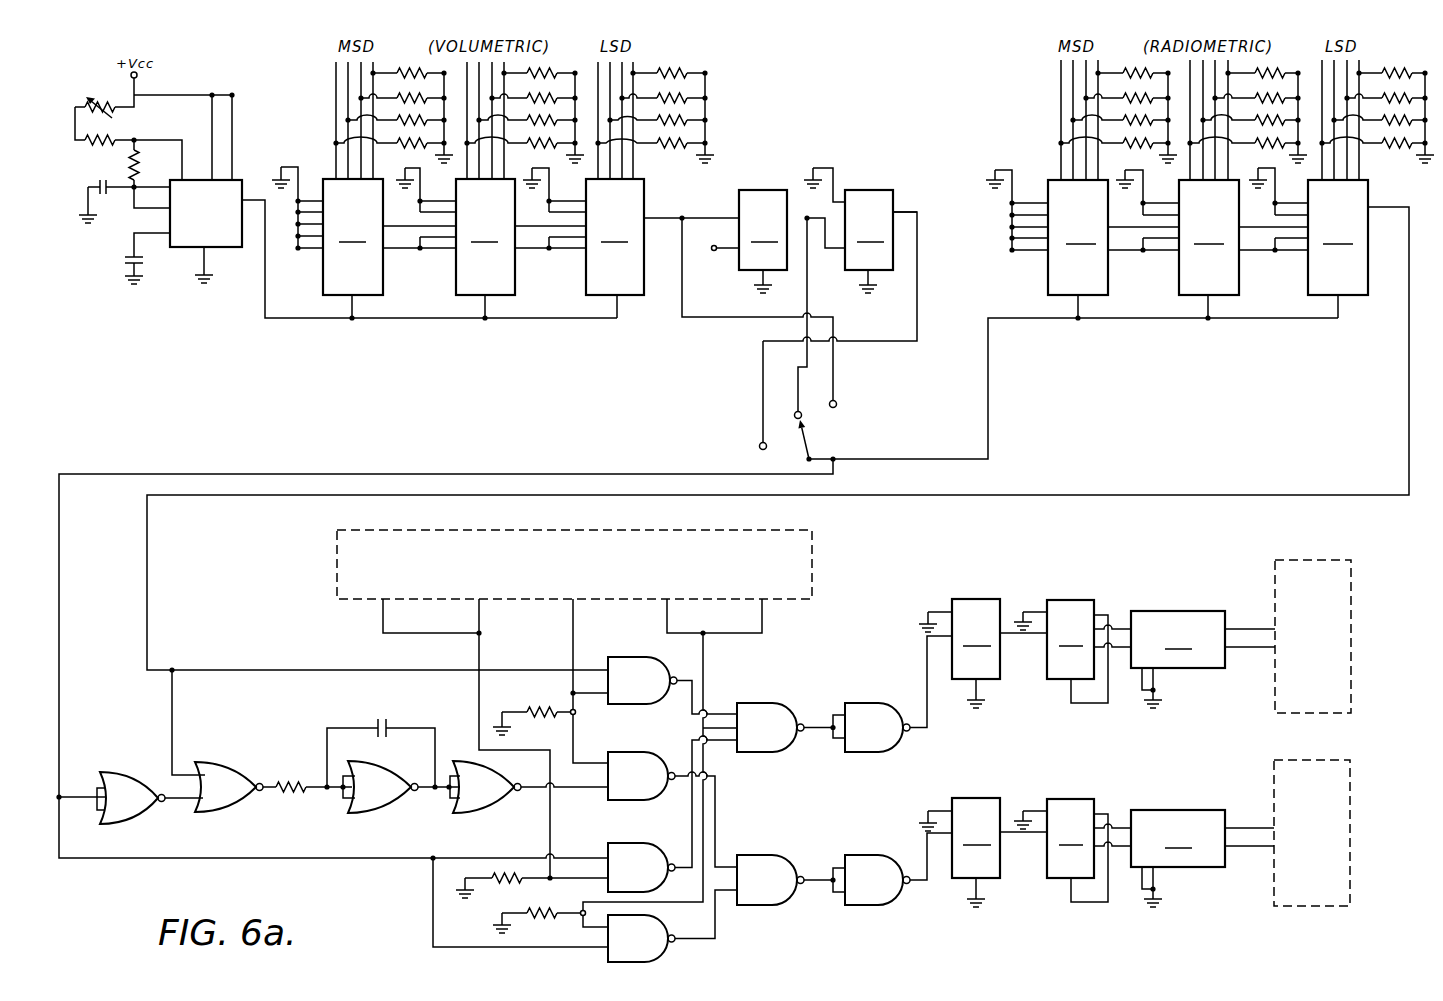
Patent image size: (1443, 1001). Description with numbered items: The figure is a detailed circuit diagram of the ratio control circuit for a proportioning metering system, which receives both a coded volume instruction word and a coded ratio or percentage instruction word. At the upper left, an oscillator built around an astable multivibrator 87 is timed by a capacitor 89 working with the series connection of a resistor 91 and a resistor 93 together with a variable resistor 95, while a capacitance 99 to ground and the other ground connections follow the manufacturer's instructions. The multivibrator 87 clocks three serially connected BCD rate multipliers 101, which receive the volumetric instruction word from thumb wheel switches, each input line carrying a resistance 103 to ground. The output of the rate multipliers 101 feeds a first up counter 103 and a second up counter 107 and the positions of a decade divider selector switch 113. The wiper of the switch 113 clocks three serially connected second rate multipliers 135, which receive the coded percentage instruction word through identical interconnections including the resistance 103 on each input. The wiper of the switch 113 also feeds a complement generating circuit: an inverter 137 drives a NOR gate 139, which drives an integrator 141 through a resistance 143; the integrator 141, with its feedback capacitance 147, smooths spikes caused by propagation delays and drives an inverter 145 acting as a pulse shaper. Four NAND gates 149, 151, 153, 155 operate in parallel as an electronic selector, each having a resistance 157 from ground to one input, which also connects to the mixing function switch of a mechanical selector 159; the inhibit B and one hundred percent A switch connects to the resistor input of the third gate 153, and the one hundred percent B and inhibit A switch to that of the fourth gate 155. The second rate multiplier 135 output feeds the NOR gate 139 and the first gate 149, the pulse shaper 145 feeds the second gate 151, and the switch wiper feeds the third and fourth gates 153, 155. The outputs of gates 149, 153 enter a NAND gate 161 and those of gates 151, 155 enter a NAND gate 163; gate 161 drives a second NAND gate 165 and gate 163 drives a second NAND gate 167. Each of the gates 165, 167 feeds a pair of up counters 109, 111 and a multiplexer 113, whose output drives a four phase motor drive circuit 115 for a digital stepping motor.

The astable multivibrator 87 is at (206, 231).
The capacitor 89 is at (98, 178).
The resistor 91 is at (110, 138).
The resistor 93 is at (138, 174).
The variable resistor 95 is at (97, 99).
The capacitance 99 is at (121, 262).
The BCD rate multipliers 101 is at (483, 237).
The resistor to ground / first up counter 103 is at (883, 174).
The second up counter 107 is at (860, 230).
The up counter 109 is at (983, 753).
The up counter 111 is at (1072, 751).
The decade divider selector switch / multiplexer 113 is at (1005, 652).
The four phase motor drive circuit 115 is at (1376, 758).
The second rate multipliers 135 is at (1208, 247).
The inverter 137 is at (131, 798).
The NOR gate 139 is at (220, 787).
The integrator 141 is at (400, 787).
The resistance 143 is at (283, 790).
The inverter / pulse shaper 145 is at (529, 787).
The feedback capacitance 147 is at (394, 711).
The first selection NAND gate 149 is at (672, 685).
The second selection NAND gate 151 is at (672, 809).
The third selection NAND gate 153 is at (672, 814).
The fourth selection NAND gate 155 is at (585, 910).
The resistance 157 is at (532, 815).
The mechanical selector 159 is at (813, 540).
The NAND gate 161 is at (785, 727).
The NAND gate 163 is at (785, 880).
The second NAND gate 165 is at (891, 694).
The second NAND gate 167 is at (891, 869).